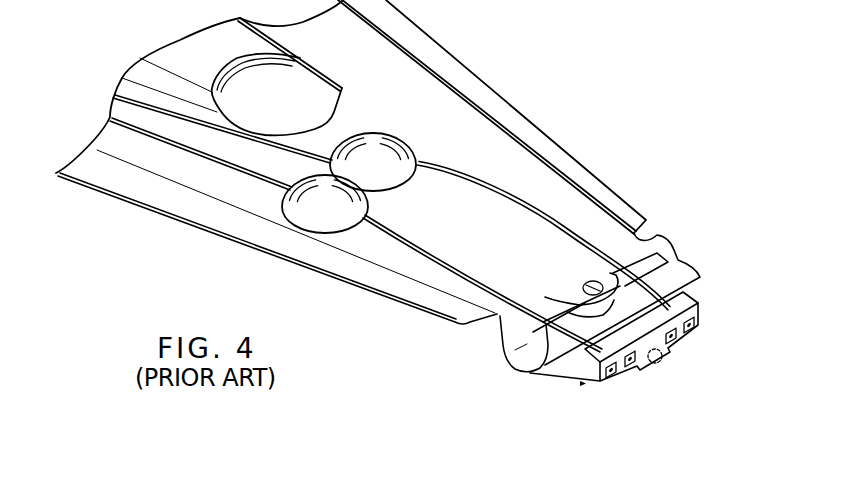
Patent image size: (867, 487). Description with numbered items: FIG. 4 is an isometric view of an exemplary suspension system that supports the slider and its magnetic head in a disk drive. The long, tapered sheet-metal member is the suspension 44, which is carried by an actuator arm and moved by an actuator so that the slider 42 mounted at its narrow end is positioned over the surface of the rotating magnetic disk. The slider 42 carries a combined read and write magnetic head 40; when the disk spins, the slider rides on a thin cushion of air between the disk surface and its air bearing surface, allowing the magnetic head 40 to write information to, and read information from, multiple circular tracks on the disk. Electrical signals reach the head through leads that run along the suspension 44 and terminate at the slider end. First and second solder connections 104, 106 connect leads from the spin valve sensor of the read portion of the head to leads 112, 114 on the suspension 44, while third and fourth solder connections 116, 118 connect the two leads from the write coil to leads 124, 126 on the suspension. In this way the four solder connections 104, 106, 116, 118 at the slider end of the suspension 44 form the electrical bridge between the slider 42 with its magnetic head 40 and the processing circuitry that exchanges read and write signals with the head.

The suspension 44 is at (511, 99).
The lead on the suspension 114 is at (570, 226).
The lead on the suspension 126 is at (490, 194).
The lead on the suspension 124 is at (437, 258).
The lead on the suspension 112 is at (390, 245).
The slider 42 is at (554, 377).
The magnetic head 40 is at (663, 368).
The first solder connection 104 is at (612, 376).
The third solder connection 116 is at (628, 368).
The fourth solder connection 118 is at (674, 341).
The second solder connection 106 is at (692, 324).